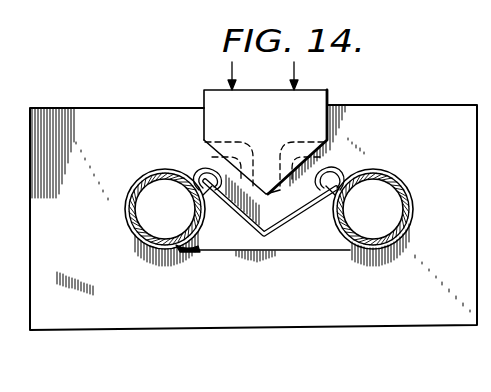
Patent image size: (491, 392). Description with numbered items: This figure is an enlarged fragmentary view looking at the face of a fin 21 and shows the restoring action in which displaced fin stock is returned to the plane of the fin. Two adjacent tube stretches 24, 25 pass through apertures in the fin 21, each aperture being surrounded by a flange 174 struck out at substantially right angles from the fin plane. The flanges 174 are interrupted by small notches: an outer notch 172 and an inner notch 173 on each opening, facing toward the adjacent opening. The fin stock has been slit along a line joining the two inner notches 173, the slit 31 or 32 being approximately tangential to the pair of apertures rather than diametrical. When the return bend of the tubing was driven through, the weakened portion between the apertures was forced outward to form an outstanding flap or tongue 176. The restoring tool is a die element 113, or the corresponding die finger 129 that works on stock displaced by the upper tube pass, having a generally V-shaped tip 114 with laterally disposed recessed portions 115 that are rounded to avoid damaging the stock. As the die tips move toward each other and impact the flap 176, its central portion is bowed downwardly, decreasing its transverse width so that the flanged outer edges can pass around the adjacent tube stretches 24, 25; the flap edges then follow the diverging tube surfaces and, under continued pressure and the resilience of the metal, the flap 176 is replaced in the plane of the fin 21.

The fin 21 is at (80, 108).
The die element 113 is at (218, 100).
The die finger 129 is at (316, 105).
The flange 174 is at (127, 217).
The tube length or stretch 24 is at (380, 185).
The tube length or stretch 25 is at (400, 190).
The slit 31 is at (318, 251).
The slit 32 is at (303, 274).
The inner notch 173 is at (191, 254).
The flap or tongue 176 is at (266, 196).
The V-shaped tip 114 is at (253, 208).
The recessed portion 115 is at (307, 184).
The outer notch 172 is at (198, 174).